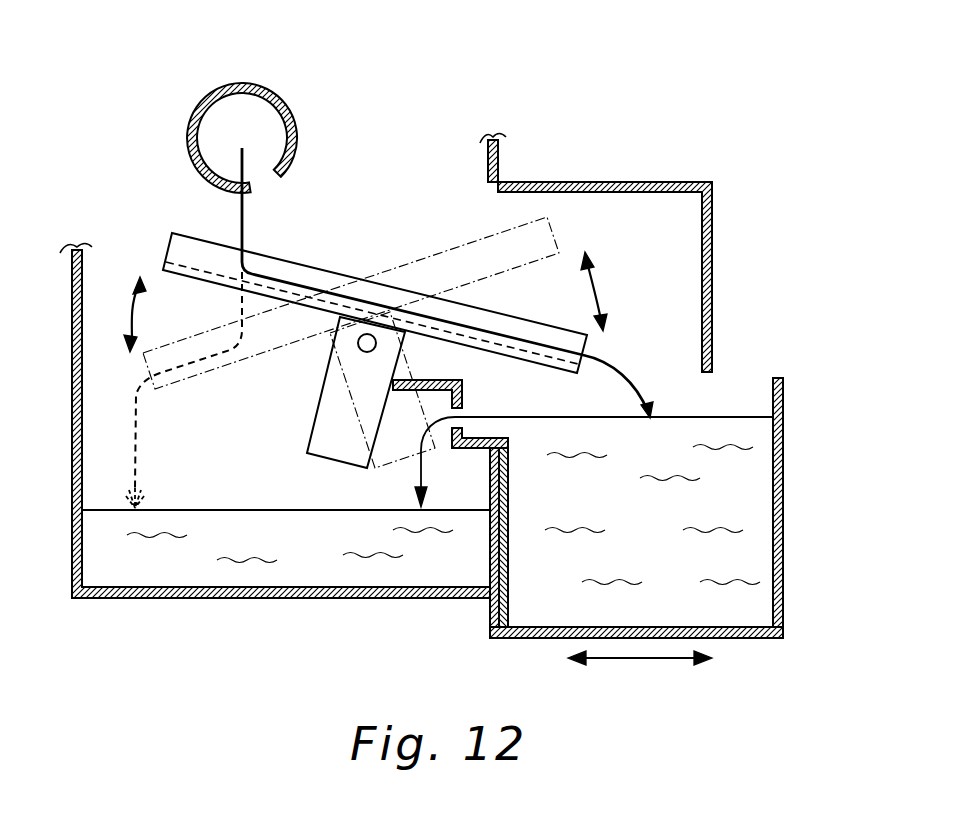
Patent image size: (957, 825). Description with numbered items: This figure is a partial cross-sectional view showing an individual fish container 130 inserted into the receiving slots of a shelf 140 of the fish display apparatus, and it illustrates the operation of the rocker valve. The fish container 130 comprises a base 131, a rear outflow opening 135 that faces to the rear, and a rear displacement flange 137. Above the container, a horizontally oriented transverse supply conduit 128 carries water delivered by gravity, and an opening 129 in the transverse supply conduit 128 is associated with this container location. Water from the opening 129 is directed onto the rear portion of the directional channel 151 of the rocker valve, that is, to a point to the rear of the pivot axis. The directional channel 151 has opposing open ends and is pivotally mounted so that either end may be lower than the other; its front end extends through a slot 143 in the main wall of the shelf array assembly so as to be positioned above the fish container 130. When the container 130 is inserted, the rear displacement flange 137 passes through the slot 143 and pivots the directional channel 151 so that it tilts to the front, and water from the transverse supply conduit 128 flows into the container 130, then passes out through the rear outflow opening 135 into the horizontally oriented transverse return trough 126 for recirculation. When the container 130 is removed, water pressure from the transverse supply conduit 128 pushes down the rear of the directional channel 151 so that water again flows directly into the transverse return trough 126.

The transverse return trough 126 is at (128, 598).
The transverse supply conduit 128 is at (258, 85).
The opening 129 is at (248, 190).
The fish container 130 is at (814, 422).
The base 131 is at (757, 640).
The rear outflow opening 135 is at (462, 390).
The rear displacement flange 137 is at (425, 380).
The shelf 140 is at (678, 182).
The slot 143 is at (498, 160).
The directional channel 151 is at (313, 267).